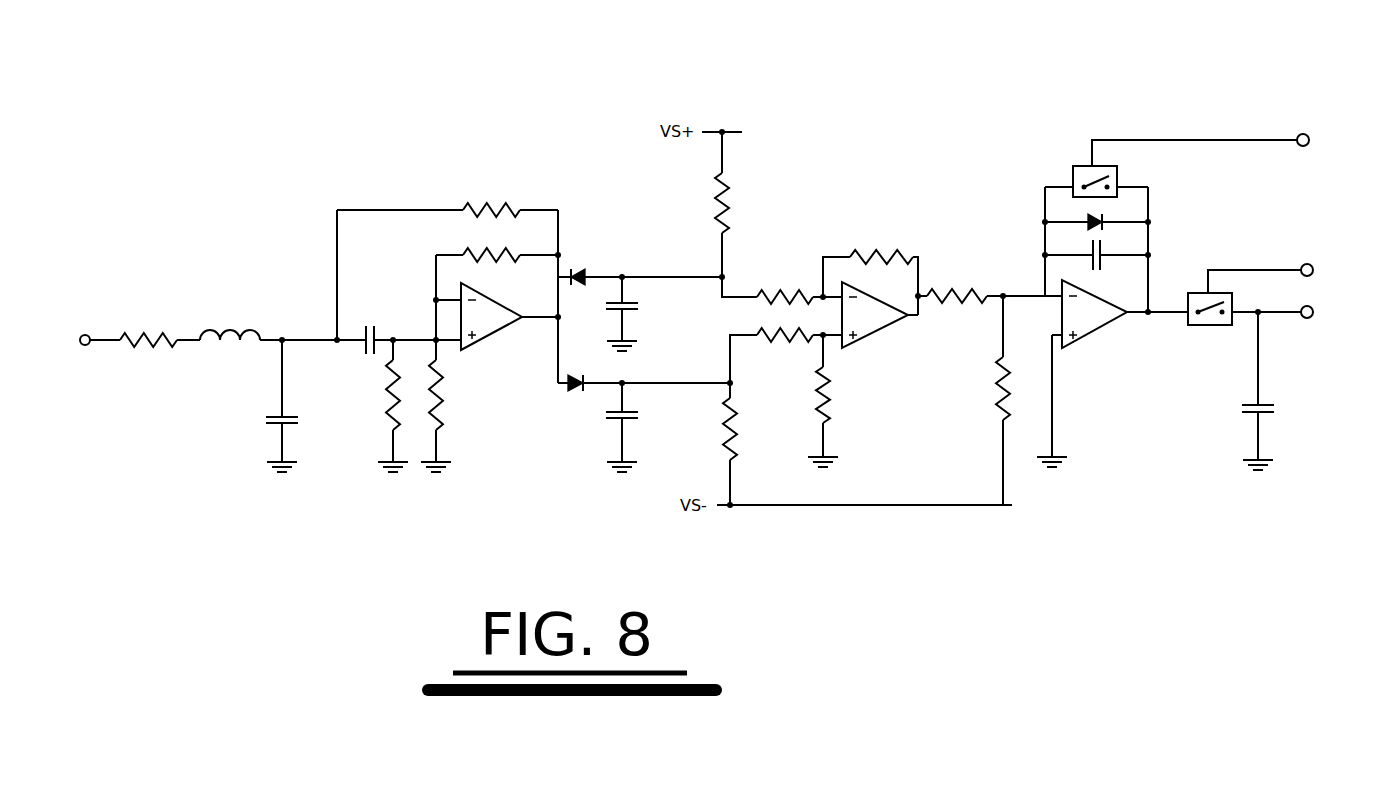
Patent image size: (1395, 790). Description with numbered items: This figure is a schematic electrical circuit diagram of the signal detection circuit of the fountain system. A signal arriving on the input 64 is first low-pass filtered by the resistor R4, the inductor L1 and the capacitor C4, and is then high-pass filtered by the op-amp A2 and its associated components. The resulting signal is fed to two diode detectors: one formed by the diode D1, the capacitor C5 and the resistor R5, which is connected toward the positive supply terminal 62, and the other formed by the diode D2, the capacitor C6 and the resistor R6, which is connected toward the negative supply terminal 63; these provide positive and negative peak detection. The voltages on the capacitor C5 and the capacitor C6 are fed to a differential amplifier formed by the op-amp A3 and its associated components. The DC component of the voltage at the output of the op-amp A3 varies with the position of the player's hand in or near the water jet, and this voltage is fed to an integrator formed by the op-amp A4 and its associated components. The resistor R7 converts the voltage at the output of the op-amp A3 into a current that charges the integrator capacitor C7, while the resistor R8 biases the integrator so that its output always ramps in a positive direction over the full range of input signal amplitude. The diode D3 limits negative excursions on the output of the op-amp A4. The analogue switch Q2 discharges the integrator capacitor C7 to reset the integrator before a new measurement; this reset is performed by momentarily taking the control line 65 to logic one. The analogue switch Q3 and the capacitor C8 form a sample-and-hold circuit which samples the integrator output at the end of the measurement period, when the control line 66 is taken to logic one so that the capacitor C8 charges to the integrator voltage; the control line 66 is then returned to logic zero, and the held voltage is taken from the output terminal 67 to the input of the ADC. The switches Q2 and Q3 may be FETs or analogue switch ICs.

The input 64 is at (86, 332).
The resistor R4 is at (154, 332).
The inductor L1 is at (220, 345).
The capacitor C4 is at (265, 420).
The op-amp A2 is at (460, 288).
The diode D1 is at (578, 265).
The diode D2 is at (580, 395).
The capacitor C5 is at (626, 291).
The capacitor C6 is at (603, 413).
The positive supply terminal VS+ 62 is at (715, 125).
The resistor R5 is at (735, 198).
The negative supply terminal VS- 63 is at (742, 508).
The resistor R6 is at (742, 428).
The op-amp A3 is at (845, 280).
The resistor R7 is at (950, 282).
The resistor R8 is at (995, 388).
The analogue switch Q2 is at (1077, 160).
The diode D3 is at (1105, 215).
The integrator capacitor C7 is at (1110, 252).
The op-amp A4 is at (1097, 333).
The analogue switch Q3 is at (1215, 330).
The capacitor C8 is at (1248, 405).
The control line 65 is at (1312, 132).
The control line 66 is at (1315, 262).
The output terminal 67 is at (1315, 305).